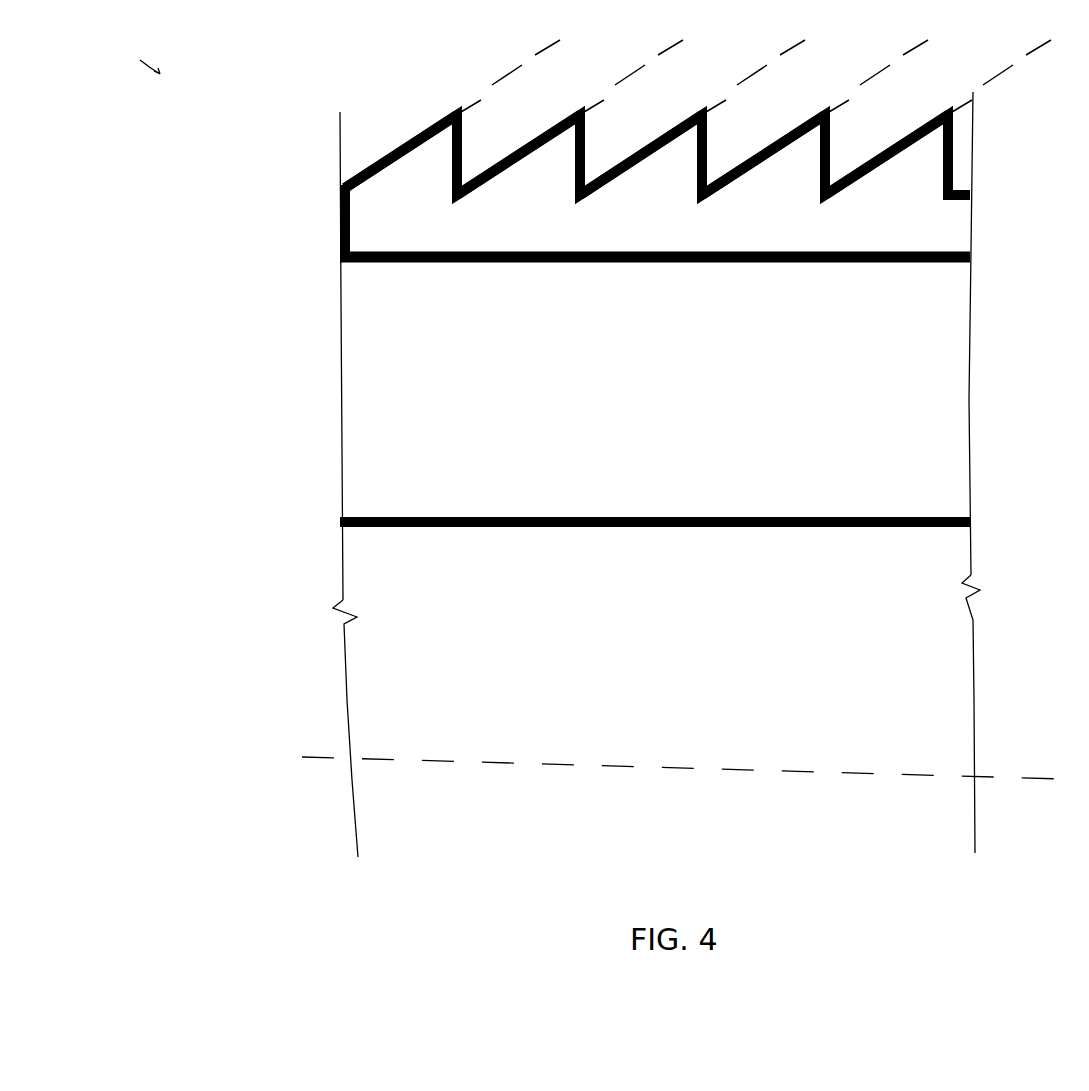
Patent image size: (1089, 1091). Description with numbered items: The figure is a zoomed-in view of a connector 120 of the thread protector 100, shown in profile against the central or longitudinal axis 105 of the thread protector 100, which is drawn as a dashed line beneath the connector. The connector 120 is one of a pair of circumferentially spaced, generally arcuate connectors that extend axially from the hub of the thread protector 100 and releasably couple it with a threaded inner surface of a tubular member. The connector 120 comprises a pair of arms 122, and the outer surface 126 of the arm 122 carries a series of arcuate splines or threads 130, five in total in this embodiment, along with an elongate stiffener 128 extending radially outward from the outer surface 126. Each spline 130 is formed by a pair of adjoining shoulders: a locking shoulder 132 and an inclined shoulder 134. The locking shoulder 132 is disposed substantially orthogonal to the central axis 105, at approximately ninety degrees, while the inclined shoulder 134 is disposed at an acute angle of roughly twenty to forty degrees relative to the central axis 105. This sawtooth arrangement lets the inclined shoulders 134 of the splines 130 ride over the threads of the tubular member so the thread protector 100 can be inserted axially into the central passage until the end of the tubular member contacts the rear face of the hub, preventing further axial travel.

The thread protector 100 is at (126, 65).
The central axis 105 is at (640, 762).
The connector 120 is at (948, 387).
The arm 122 is at (952, 462).
The outer surface 126 is at (340, 165).
The elongate stiffener 128 is at (462, 118).
The spline 130 is at (407, 176).
The locking shoulder 132 is at (462, 157).
The inclined shoulder 134 is at (400, 138).